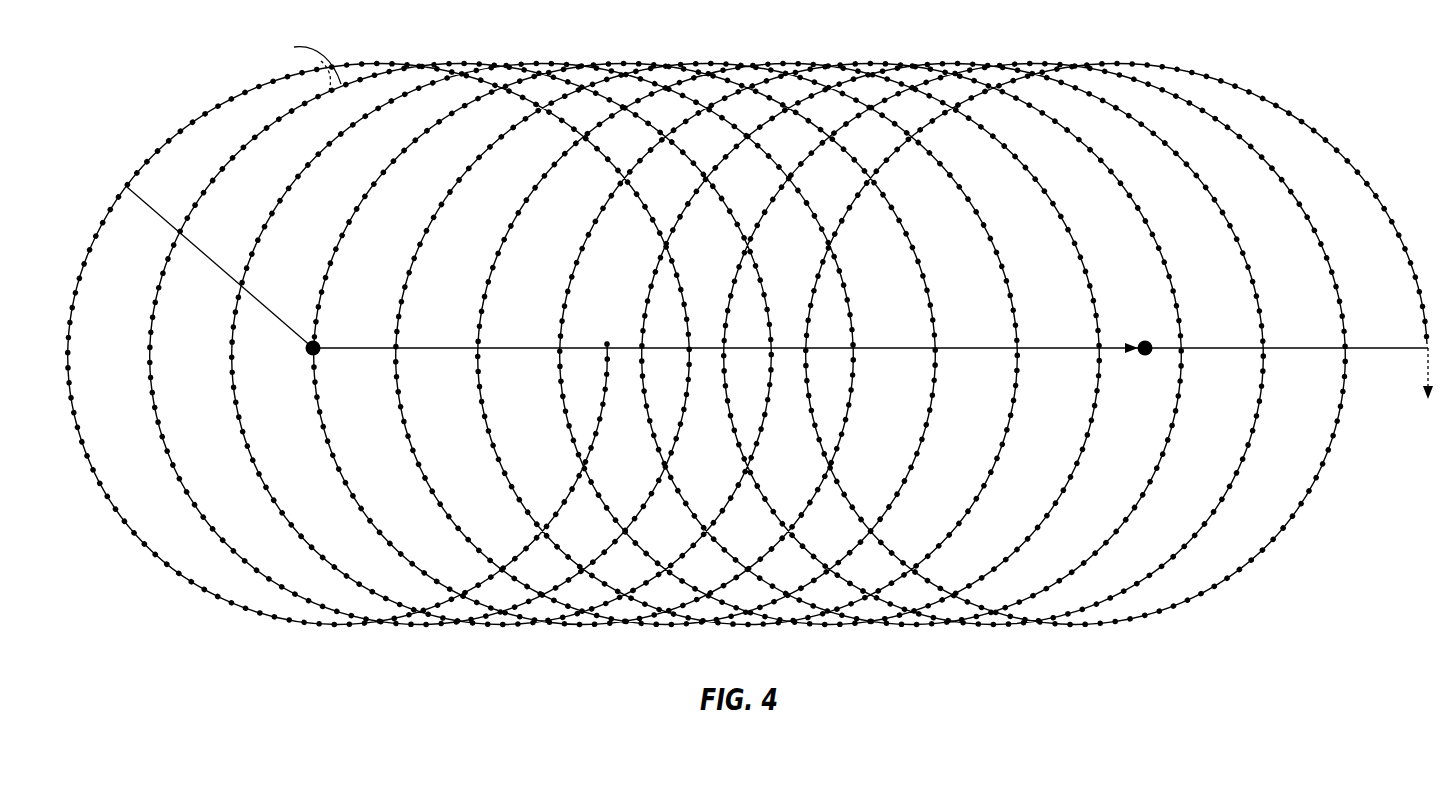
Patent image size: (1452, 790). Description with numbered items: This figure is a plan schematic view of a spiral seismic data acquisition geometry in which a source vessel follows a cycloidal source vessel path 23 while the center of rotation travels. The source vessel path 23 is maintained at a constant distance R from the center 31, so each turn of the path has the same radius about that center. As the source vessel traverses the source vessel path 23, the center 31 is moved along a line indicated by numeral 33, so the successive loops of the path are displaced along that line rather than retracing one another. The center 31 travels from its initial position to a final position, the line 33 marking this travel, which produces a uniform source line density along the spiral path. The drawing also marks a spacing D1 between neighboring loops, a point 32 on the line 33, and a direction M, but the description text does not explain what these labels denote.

The source vessel path 23 is at (200, 118).
The winding pitch (distance between adjacent turns) D1 is at (299, 63).
The constant distance R is at (198, 247).
The center 31 is at (307, 356).
The end point 32 is at (1142, 338).
The line 33 is at (515, 348).
The movement direction M is at (1426, 389).